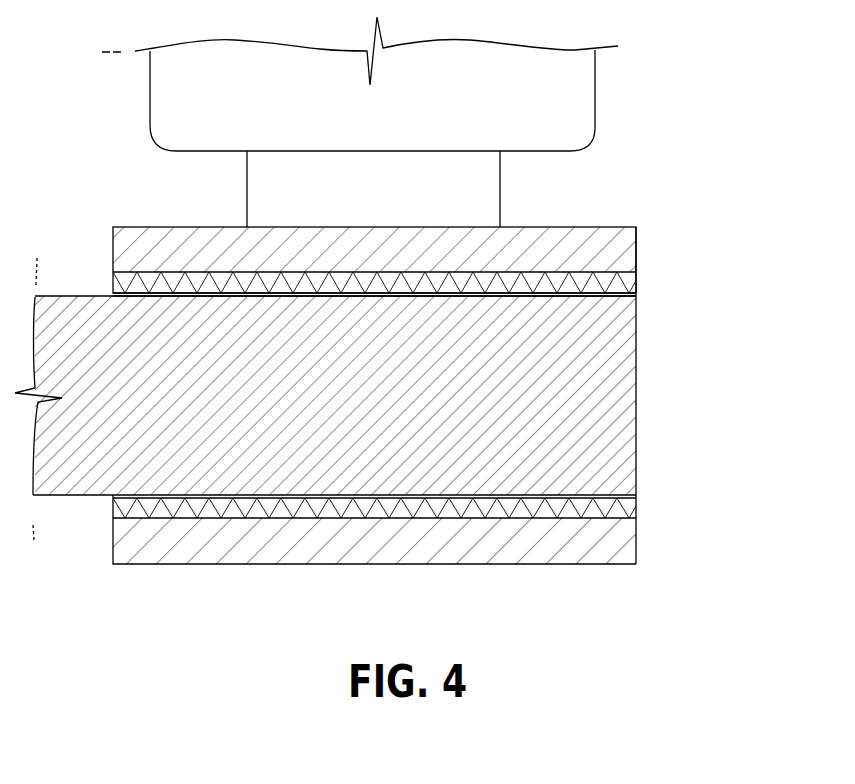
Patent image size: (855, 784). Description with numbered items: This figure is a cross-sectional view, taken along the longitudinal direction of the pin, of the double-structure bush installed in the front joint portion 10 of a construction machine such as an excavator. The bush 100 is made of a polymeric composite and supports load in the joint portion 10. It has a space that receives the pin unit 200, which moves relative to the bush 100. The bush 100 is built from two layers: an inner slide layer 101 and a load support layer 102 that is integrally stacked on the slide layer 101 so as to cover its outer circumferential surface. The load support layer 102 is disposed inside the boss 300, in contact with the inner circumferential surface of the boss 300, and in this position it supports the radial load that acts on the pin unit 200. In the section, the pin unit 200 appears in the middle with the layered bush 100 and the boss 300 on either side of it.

The joint portion 10 is at (638, 183).
The bush 100 is at (455, 300).
The slide layer 101 is at (600, 297).
The load support layer 102 is at (625, 283).
The pin unit 200 is at (600, 442).
The boss 300 is at (620, 540).